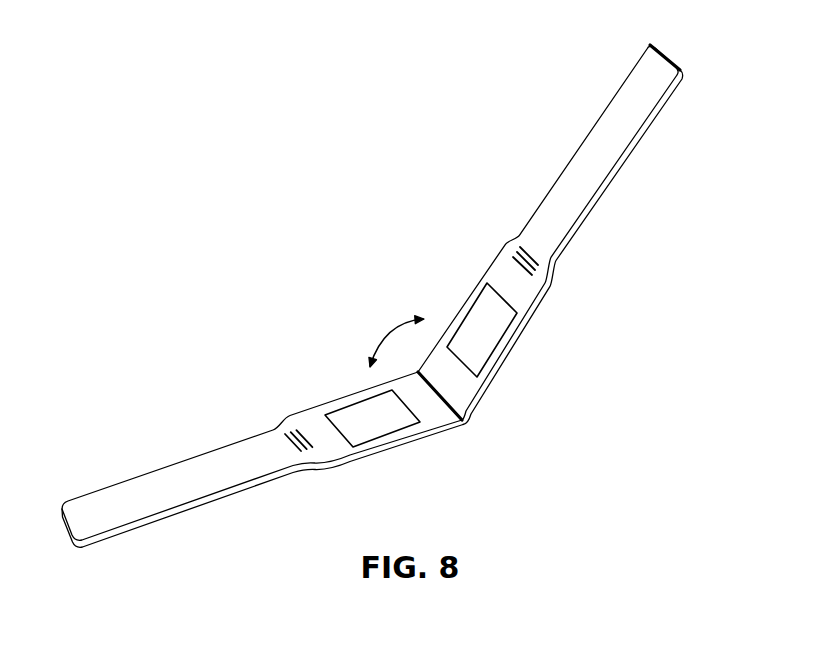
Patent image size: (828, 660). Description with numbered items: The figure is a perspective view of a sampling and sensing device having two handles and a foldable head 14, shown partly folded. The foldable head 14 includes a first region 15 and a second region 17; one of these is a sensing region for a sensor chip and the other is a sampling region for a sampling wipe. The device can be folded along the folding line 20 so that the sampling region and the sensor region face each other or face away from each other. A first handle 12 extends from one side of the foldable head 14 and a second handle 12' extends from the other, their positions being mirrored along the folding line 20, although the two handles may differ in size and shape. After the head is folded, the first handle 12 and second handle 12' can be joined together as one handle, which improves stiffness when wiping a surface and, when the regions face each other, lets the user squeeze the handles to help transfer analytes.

The first handle 12 is at (262, 459).
The second handle 12' is at (550, 235).
The foldable head 14 is at (312, 420).
The first region 15 is at (367, 415).
The second region 17 is at (478, 330).
The folding line 20 is at (443, 406).